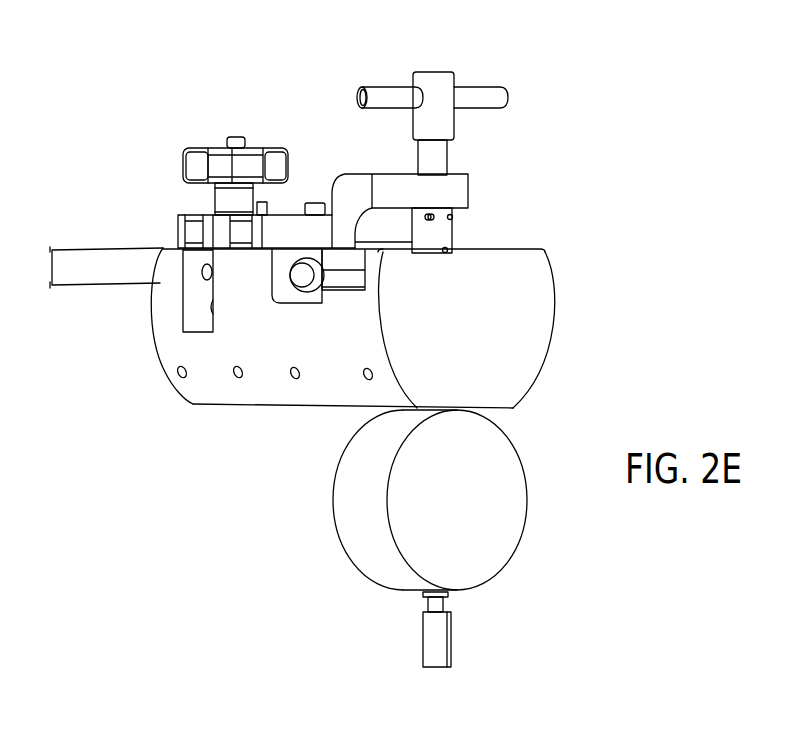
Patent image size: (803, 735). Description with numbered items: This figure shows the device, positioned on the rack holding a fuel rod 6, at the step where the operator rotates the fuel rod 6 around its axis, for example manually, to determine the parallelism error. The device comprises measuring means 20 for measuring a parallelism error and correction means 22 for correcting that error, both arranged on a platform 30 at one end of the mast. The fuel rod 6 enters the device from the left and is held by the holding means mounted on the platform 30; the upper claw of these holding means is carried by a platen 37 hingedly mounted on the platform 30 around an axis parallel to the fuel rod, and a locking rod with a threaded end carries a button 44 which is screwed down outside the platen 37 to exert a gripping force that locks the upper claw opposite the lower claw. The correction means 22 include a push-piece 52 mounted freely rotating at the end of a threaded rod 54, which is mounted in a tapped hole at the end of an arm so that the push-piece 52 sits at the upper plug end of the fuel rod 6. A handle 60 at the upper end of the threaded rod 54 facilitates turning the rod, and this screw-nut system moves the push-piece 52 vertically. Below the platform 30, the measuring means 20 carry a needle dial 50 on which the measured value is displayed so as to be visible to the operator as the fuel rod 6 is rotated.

The fuel rod 6 is at (82, 248).
The measuring means 20 is at (434, 542).
The correction means 22 is at (425, 136).
The platform 30 is at (213, 422).
The platen 37 is at (283, 223).
The button 44 is at (195, 152).
The dial 50 is at (508, 533).
The push-piece 52 is at (443, 242).
The threaded rod 54 is at (438, 167).
The handle 60 is at (497, 95).